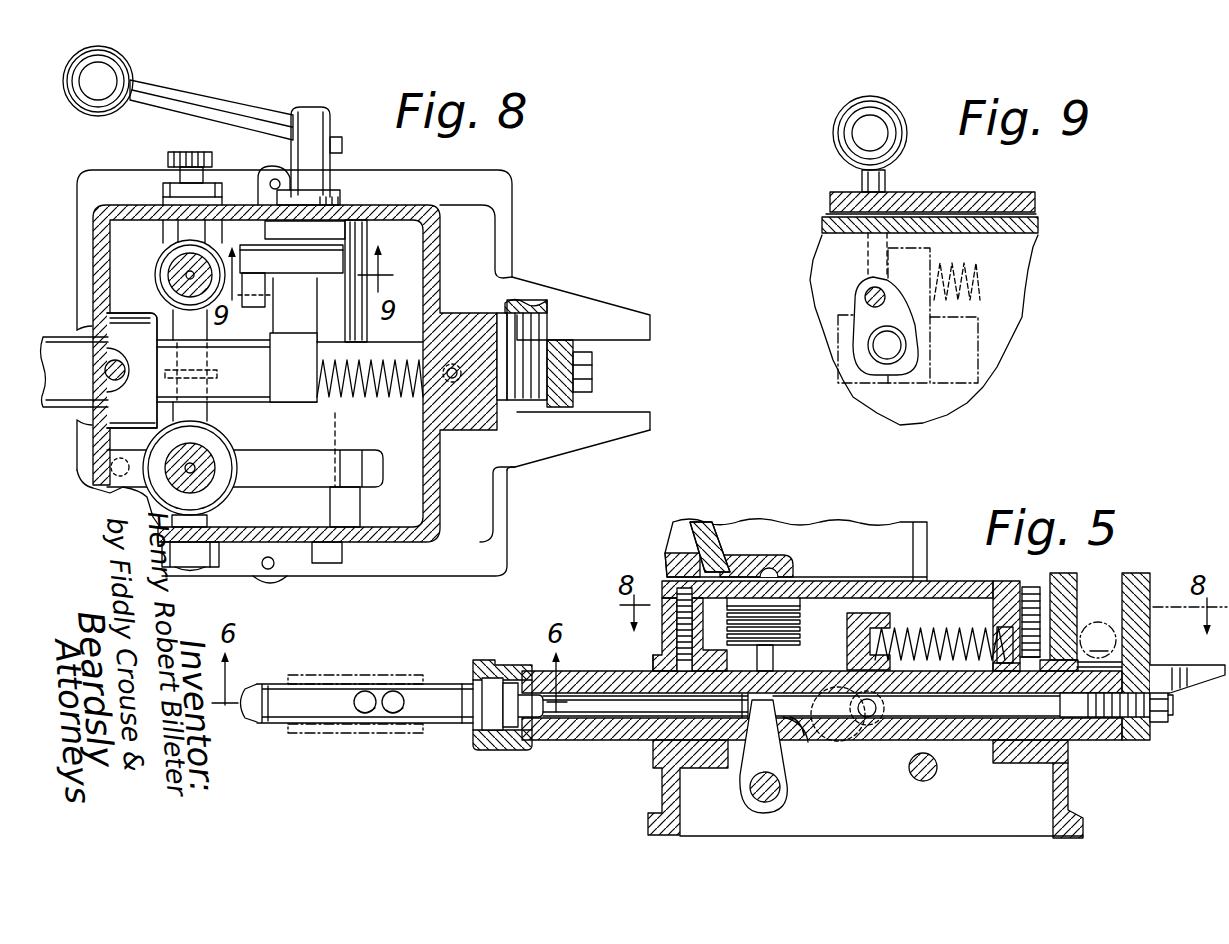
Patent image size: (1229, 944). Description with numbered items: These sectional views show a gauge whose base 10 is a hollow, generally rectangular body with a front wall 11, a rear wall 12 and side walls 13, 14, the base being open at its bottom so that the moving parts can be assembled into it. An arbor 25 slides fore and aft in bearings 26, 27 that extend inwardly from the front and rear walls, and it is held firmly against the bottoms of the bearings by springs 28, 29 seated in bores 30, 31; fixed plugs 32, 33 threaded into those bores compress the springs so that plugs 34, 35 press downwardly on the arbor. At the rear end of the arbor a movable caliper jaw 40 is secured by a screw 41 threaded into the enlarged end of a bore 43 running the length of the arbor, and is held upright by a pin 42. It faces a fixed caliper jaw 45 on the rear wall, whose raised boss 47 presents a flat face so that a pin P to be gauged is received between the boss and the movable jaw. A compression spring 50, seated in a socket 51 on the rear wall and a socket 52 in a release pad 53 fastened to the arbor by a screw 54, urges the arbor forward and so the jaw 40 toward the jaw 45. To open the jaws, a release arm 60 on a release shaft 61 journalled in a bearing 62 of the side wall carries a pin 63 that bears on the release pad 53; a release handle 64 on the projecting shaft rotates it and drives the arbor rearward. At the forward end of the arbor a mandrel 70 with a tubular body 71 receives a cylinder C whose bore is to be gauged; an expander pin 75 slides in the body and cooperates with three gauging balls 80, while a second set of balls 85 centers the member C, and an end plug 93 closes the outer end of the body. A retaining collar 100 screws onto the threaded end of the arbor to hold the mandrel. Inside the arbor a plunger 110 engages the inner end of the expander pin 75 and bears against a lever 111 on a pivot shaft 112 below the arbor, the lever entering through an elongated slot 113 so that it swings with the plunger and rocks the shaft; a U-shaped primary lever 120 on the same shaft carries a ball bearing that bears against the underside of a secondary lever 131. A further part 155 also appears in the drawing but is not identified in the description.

In FIG. 5, the base 10 is at (785, 622).
In FIG. 8, the front wall 11 is at (100, 288).
In FIG. 5, the front wall 11 is at (665, 650).
In FIG. 8, the rear wall 12 is at (435, 492).
In FIG. 5, the rear wall 12 is at (1062, 795).
In FIG. 8, the side wall 13 is at (135, 208).
In FIG. 8, the side wall 14 is at (298, 545).
In FIG. 5, the arbor 25 is at (897, 743).
In FIG. 5, the bearing 26 is at (713, 768).
In FIG. 5, the bearing 27 is at (1020, 760).
In FIG. 5, the spring 28 is at (716, 611).
In FIG. 5, the spring 29 is at (1042, 602).
In FIG. 5, the bore 30 is at (752, 623).
In FIG. 5, the bore 31 is at (1040, 625).
In FIG. 5, the fixed plug 32 is at (675, 585).
In FIG. 5, the fixed plug 33 is at (1020, 600).
In FIG. 5, the plug 34 is at (673, 660).
In FIG. 5, the plug 35 is at (1037, 648).
In FIG. 5, the caliper jaw member 40 is at (1135, 580).
In FIG. 5, the screw 41 is at (1170, 712).
In FIG. 5, the pin 42 is at (1127, 680).
In FIG. 5, the bore 43 is at (980, 715).
In FIG. 8, the fixed caliper jaw 45 is at (482, 312).
In FIG. 5, the fixed caliper jaw 45 is at (1058, 577).
In FIG. 8, the raised boss 47 is at (500, 378).
In FIG. 5, the spring 50 is at (935, 628).
In FIG. 5, the socket 51 is at (985, 640).
In FIG. 5, the socket 52 is at (893, 635).
In FIG. 8, the release pad 53 is at (272, 366).
In FIG. 9, the release pad 53 is at (920, 263).
In FIG. 5, the release pad 53 is at (862, 620).
In FIG. 5, the screw 54 is at (867, 717).
In FIG. 8, the release arm 60 is at (340, 271).
In FIG. 9, the release arm 60 is at (857, 302).
In FIG. 5, the release arm 60 is at (840, 690).
In FIG. 8, the release shaft 61 is at (338, 162).
In FIG. 9, the release shaft 61 is at (882, 348).
In FIG. 8, the bearing 62 is at (270, 228).
In FIG. 8, the pin 63 is at (258, 305).
In FIG. 9, the pin 63 is at (866, 297).
In FIG. 8, the release handle 64 is at (212, 103).
In FIG. 9, the release handle 64 is at (890, 183).
In FIG. 5, the mandrel 70 is at (375, 709).
In FIG. 5, the tubular body 71 is at (467, 722).
In FIG. 5, the expander pin 75 is at (533, 725).
In FIG. 5, the gauging balls 80 is at (393, 713).
In FIG. 5, the balls 85 is at (360, 712).
In FIG. 5, the end plug 93 is at (256, 718).
In FIG. 5, the retaining collar 100 is at (500, 752).
In FIG. 5, the plunger 110 is at (652, 707).
In FIG. 5, the lever 111 is at (773, 813).
In FIG. 5, the pivot shaft 112 is at (757, 793).
In FIG. 5, the elongated slot 113 is at (795, 728).
In FIG. 8, the lever 120 is at (285, 450).
In FIG. 8, the lever 131 is at (263, 425).
In FIG. 5, the bracket 155 is at (745, 575).
In FIG. 5, the cylinder C is at (355, 678).
In FIG. 5, the pin P is at (1098, 640).